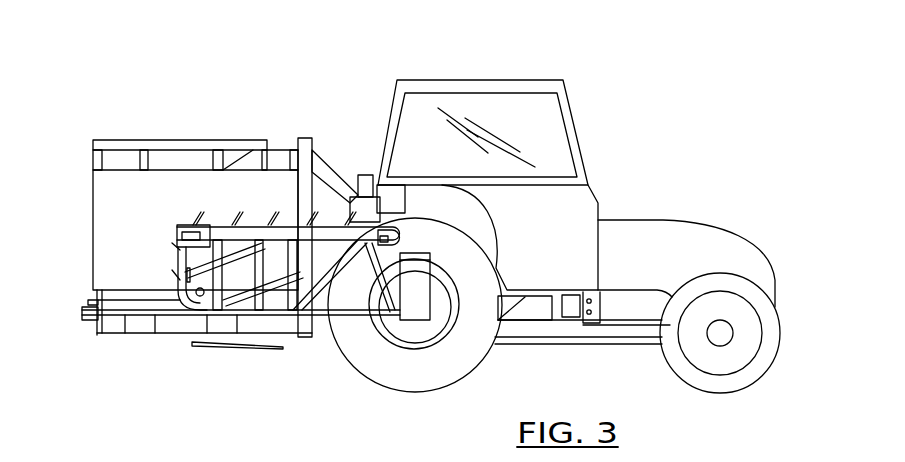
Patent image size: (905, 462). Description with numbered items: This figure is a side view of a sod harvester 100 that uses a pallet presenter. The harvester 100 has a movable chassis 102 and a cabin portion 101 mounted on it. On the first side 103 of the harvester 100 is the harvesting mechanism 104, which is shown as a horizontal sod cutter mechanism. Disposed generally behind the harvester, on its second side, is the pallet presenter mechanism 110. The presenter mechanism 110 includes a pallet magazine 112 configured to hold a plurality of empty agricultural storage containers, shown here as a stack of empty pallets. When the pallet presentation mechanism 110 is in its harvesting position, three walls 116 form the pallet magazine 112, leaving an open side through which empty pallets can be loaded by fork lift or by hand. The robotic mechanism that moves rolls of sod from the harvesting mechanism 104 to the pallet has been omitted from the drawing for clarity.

The harvester 100 is at (632, 87).
The cabin portion 101 is at (502, 83).
The movable chassis 102 is at (684, 226).
The first side 103 is at (585, 212).
The harvesting mechanism 104 is at (265, 313).
The pallet presenter mechanism 110 is at (112, 148).
The pallet magazine 112 is at (158, 140).
The walls 116 is at (106, 244).